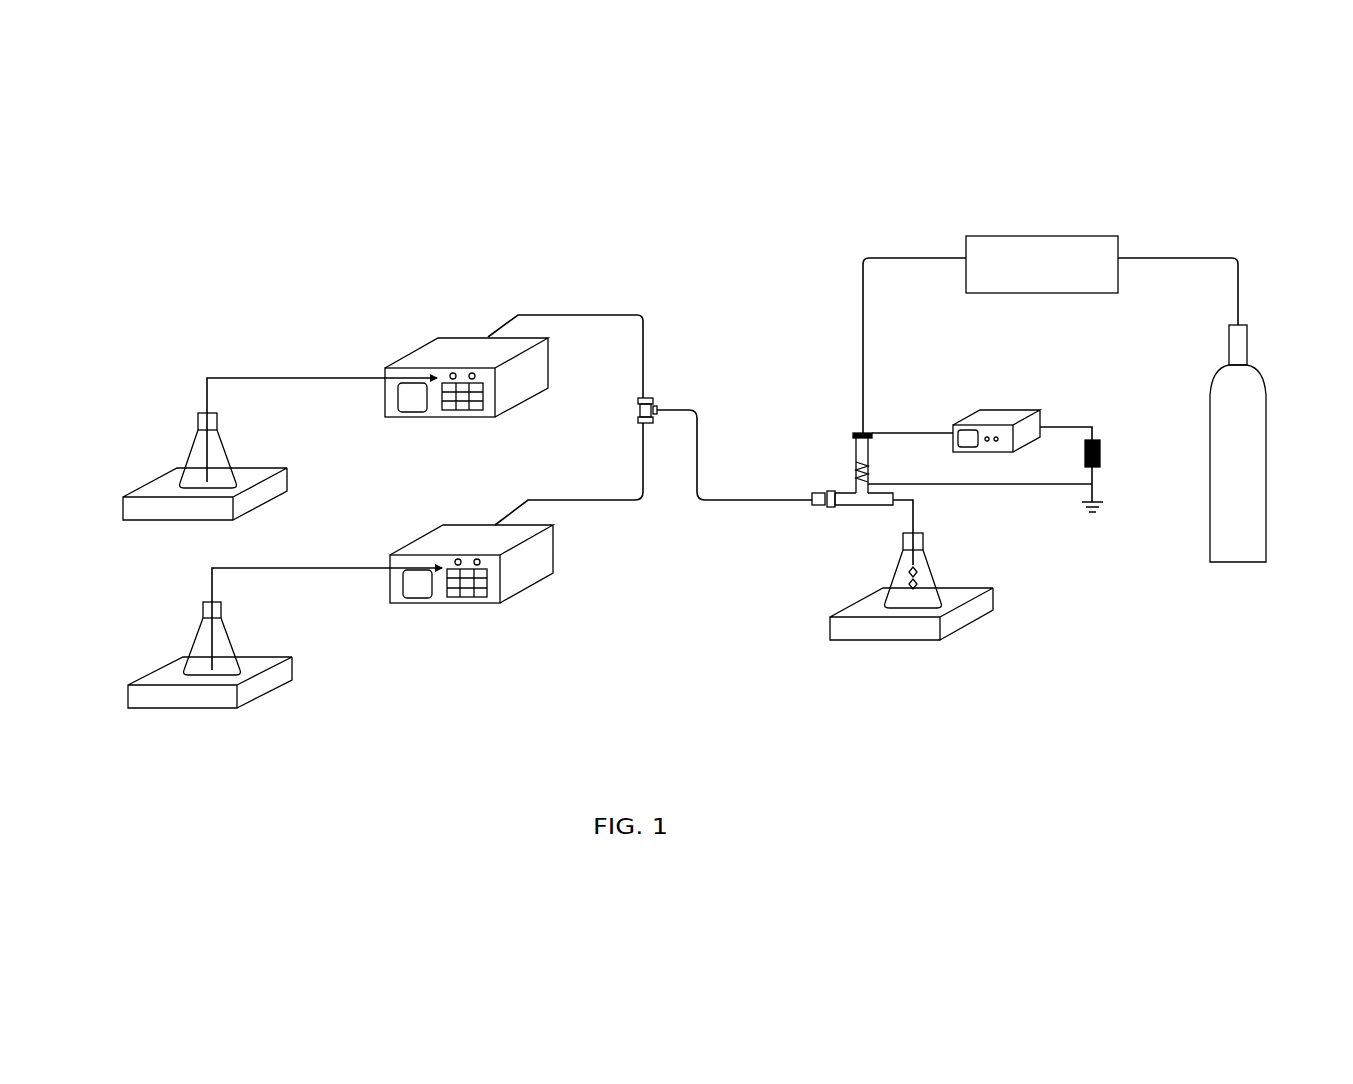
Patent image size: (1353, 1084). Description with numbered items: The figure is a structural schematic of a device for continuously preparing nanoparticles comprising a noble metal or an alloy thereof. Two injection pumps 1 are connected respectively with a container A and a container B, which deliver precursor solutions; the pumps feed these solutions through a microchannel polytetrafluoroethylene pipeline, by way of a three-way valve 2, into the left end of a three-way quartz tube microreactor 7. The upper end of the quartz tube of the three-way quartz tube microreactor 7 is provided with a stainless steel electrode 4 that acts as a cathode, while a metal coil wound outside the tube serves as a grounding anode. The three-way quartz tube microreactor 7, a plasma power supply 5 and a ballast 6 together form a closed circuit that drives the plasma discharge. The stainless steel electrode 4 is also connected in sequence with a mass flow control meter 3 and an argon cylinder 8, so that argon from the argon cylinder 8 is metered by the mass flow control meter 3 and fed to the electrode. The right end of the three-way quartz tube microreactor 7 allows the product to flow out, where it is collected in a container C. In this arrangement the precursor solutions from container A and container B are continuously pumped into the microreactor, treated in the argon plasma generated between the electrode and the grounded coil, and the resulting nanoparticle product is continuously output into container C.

The injection pump 1 is at (425, 340).
The three-way valve 2 is at (652, 397).
The mass flow control meter 3 is at (1022, 232).
The stainless steel electrode 4 is at (867, 430).
The plasma power supply 5 is at (995, 407).
The ballast 6 is at (1100, 447).
The three-way quartz tube microreactor 7 is at (858, 512).
The argon cylinder 8 is at (1238, 565).
The container A is at (192, 480).
The container B is at (223, 672).
The container C is at (915, 598).